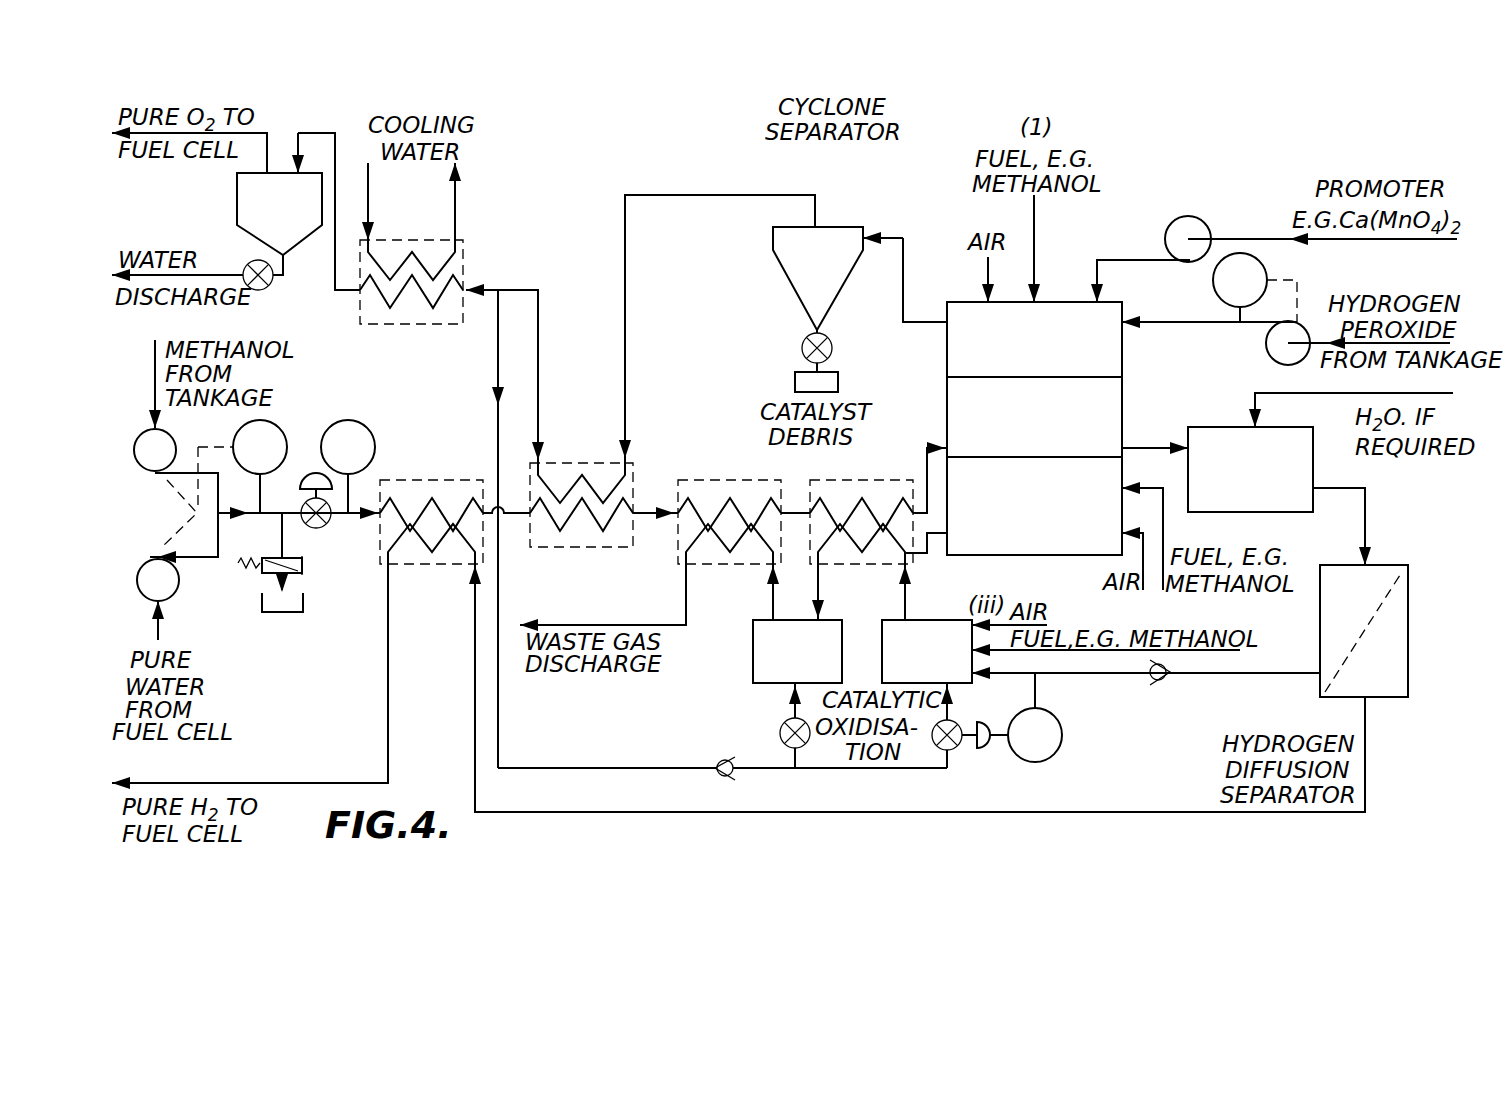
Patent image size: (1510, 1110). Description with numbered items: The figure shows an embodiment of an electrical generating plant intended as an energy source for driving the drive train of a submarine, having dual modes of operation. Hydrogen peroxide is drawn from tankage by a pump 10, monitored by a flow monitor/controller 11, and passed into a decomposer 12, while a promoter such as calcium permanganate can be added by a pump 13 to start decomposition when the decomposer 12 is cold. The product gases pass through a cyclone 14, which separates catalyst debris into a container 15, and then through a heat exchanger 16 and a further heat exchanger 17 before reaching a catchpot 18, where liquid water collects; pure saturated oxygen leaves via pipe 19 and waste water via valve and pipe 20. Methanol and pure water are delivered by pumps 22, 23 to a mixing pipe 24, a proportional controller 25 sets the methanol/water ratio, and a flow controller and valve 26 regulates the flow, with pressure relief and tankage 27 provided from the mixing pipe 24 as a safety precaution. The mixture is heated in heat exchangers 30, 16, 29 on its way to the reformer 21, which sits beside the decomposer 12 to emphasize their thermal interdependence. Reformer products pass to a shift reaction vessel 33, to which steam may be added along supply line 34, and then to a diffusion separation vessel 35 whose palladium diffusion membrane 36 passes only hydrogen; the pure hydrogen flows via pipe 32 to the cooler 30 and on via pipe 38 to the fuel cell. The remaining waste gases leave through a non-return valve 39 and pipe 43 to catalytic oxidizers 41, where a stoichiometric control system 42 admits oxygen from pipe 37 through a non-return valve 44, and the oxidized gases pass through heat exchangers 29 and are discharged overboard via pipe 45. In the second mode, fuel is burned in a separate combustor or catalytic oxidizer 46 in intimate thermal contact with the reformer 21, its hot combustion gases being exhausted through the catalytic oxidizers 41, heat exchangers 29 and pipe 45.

The pump 10 is at (1266, 343).
The flow monitor/controller 11 is at (1213, 283).
The decomposer 12 is at (965, 317).
The pump 13 is at (1176, 232).
The cyclone 14 is at (825, 250).
The container 15 is at (800, 378).
The heat exchanger 16 is at (598, 467).
The heat exchanger 17 is at (462, 258).
The catchpot 18 is at (245, 220).
The pipe 19 is at (253, 133).
The valve and pipe 20 is at (222, 277).
The reformer 21 is at (968, 400).
The pump 22 is at (143, 467).
The pump 23 is at (144, 570).
The mixing pipe 24 is at (228, 516).
The proportional controller 25 is at (264, 421).
The flow controller and valve 26 is at (309, 477).
The pressure relief and tankage 27 is at (305, 597).
The heat exchanger 29 is at (722, 470).
The heat exchanger 30 is at (415, 547).
The pipe 32 is at (1178, 808).
The shift reaction vessel 33 is at (1207, 440).
The supply line 34 is at (1275, 393).
The diffusion separation vessel 35 is at (1335, 697).
The diffusion membrane 36 is at (1380, 600).
The pipe 37 is at (540, 768).
The pipe 38 is at (352, 783).
The non-return valve 39 is at (1152, 680).
The catalytic oxidizer 41 is at (770, 658).
The stoichiometric control system 42 is at (1013, 747).
The pipe 43 is at (1235, 675).
The non-return valve 44 is at (718, 760).
The pipe 45 is at (662, 625).
The catalytic oxidizer 46 is at (1050, 556).